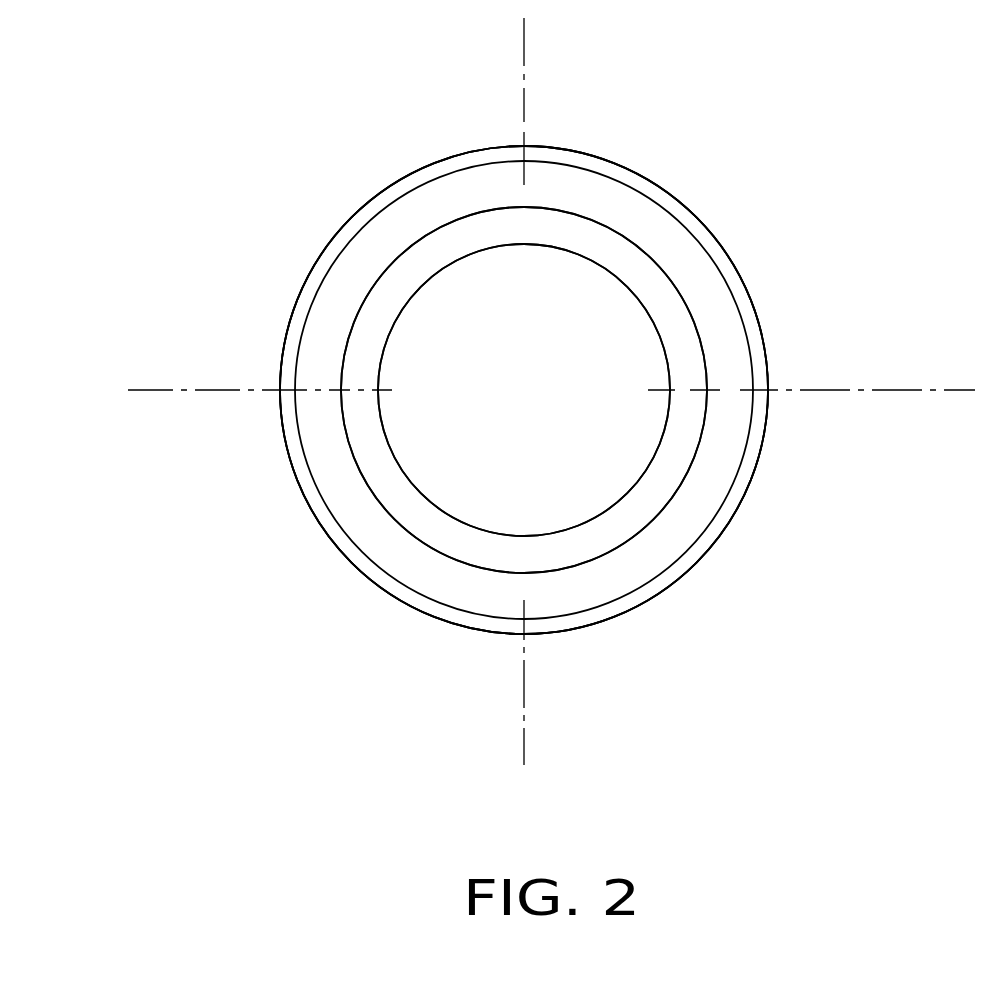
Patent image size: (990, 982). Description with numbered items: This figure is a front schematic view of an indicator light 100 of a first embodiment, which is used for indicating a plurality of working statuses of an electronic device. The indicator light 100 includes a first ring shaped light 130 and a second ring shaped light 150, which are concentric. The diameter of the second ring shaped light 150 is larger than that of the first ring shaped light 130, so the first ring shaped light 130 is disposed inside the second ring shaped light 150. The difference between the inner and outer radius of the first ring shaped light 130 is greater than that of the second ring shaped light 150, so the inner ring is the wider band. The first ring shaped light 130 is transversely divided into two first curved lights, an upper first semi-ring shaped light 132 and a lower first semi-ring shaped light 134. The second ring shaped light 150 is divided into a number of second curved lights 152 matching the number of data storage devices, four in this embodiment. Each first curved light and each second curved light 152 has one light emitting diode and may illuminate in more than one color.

The indicator light 100 is at (880, 183).
The first ring shaped light 130 is at (700, 335).
The upper first semi-ring shaped light 132 is at (373, 328).
The lower first semi-ring shaped light 134 is at (373, 453).
The second ring shaped light 150 is at (717, 240).
The second curved light 152 is at (377, 208).